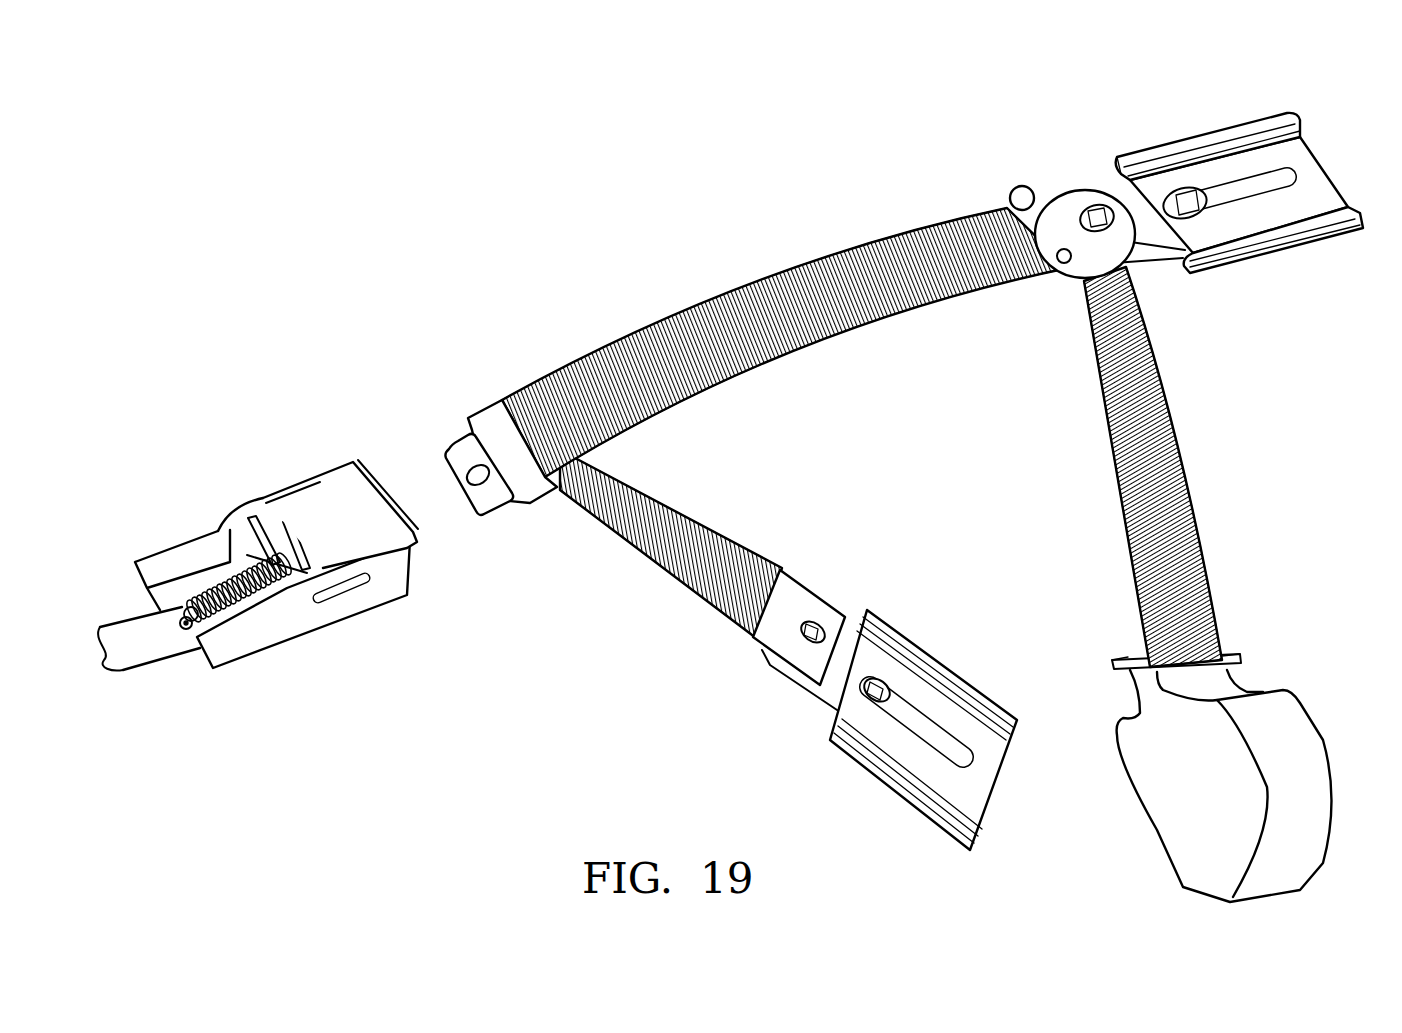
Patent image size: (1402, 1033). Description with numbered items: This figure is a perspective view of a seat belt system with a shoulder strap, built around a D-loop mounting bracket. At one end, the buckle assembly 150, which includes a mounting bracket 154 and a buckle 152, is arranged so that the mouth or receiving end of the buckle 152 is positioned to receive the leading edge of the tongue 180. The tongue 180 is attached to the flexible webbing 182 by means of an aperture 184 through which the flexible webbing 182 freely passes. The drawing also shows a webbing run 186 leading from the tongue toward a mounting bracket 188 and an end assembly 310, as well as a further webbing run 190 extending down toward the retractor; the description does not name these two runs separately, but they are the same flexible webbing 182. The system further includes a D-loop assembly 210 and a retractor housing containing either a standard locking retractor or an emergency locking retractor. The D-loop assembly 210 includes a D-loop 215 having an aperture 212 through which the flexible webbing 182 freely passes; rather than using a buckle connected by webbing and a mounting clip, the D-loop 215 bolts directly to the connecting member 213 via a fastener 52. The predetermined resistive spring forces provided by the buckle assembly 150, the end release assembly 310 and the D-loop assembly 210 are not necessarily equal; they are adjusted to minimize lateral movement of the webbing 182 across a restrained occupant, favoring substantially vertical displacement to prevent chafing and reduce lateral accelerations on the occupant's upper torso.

The fastener 52 is at (1117, 235).
The buckle assembly 150 is at (271, 499).
The buckle 152 is at (237, 537).
The mounting bracket 154 is at (258, 650).
The tongue 180 is at (490, 475).
The flexible webbing 182 is at (862, 437).
The aperture 184 is at (537, 490).
The strap 186 is at (753, 548).
The mounting bracket 188 is at (823, 600).
The strap 190 is at (1138, 557).
The D-loop assembly 210 is at (1231, 204).
The aperture 212 is at (1025, 193).
The connecting member 213 is at (1112, 187).
The D-loop 215 is at (1065, 199).
The end assembly 310 is at (893, 613).